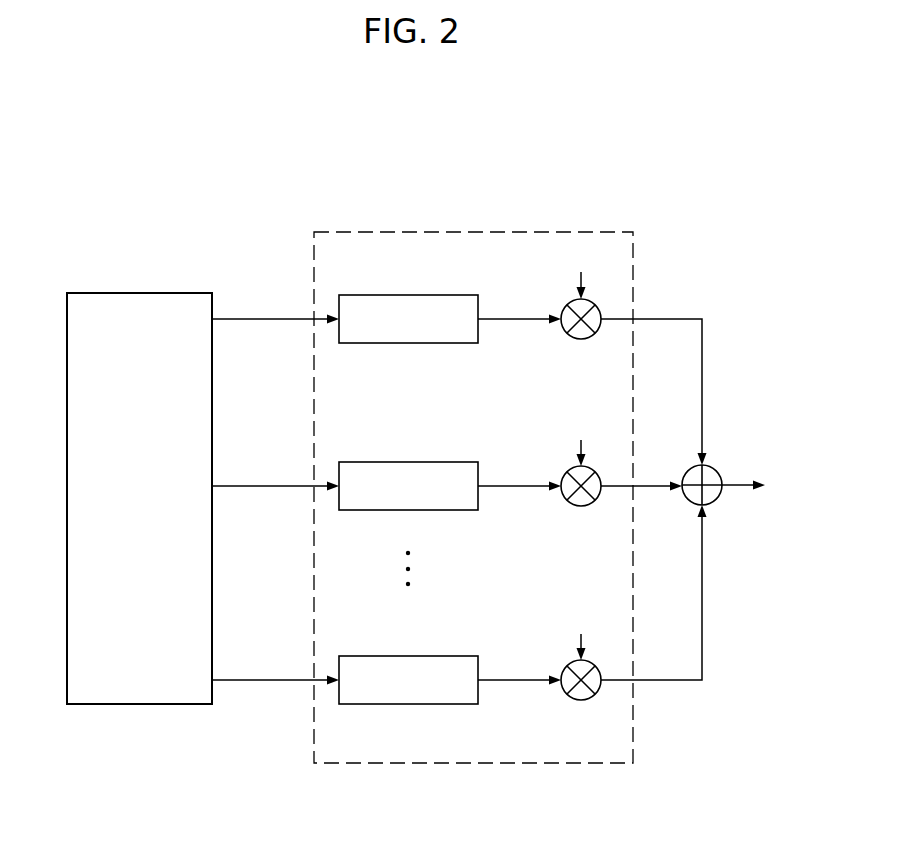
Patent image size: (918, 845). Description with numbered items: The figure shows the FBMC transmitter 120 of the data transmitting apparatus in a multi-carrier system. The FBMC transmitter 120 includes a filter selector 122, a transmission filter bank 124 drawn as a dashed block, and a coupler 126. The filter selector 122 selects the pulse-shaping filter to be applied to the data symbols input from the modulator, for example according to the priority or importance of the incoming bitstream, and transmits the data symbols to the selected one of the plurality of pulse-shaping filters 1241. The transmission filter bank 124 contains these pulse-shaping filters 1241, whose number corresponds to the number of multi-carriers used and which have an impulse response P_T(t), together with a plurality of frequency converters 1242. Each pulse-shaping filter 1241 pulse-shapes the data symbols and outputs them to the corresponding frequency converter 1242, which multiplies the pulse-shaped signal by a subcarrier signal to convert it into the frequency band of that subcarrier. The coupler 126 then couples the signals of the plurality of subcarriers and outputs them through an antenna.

The FBMC transmitter 120 is at (170, 188).
The filter selector 122 is at (168, 293).
The transmission filter bank 124 is at (592, 232).
The pulse-shaping filters 1241 is at (450, 295).
The frequency converters 1242 is at (585, 723).
The coupler 126 is at (719, 466).